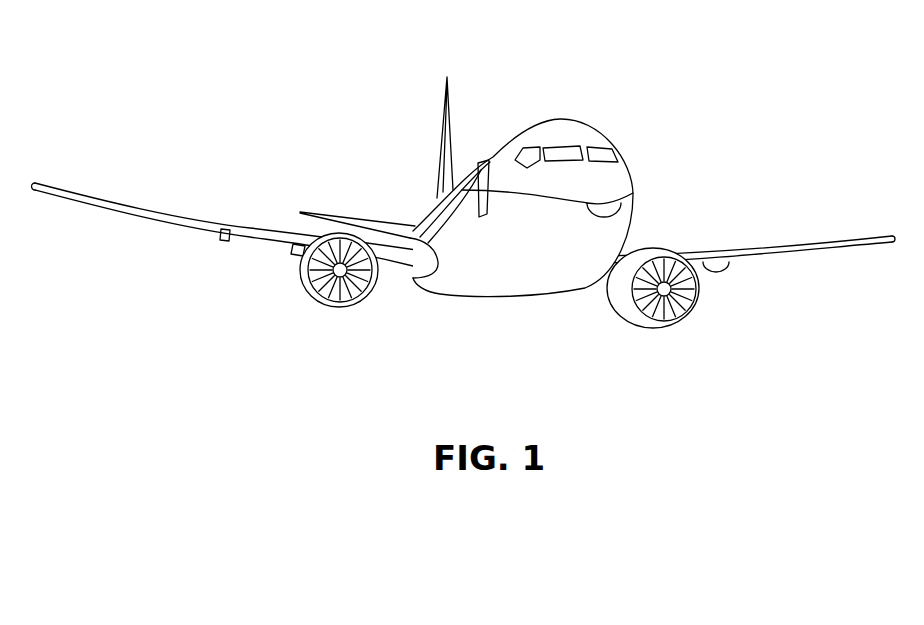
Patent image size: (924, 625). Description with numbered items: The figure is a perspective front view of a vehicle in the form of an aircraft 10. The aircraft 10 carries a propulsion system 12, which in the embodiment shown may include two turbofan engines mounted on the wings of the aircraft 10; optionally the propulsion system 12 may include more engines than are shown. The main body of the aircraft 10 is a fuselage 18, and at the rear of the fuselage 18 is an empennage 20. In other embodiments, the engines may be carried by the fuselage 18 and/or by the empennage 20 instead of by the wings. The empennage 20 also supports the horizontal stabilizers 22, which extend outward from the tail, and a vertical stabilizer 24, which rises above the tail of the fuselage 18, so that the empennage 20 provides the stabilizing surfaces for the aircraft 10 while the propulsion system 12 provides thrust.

The aircraft 10 is at (464, 208).
The propulsion system 12 is at (691, 323).
The fuselage 18 is at (635, 201).
The empennage 20 is at (435, 192).
The horizontal stabilizers 22 is at (323, 207).
The vertical stabilizer 24 is at (442, 110).